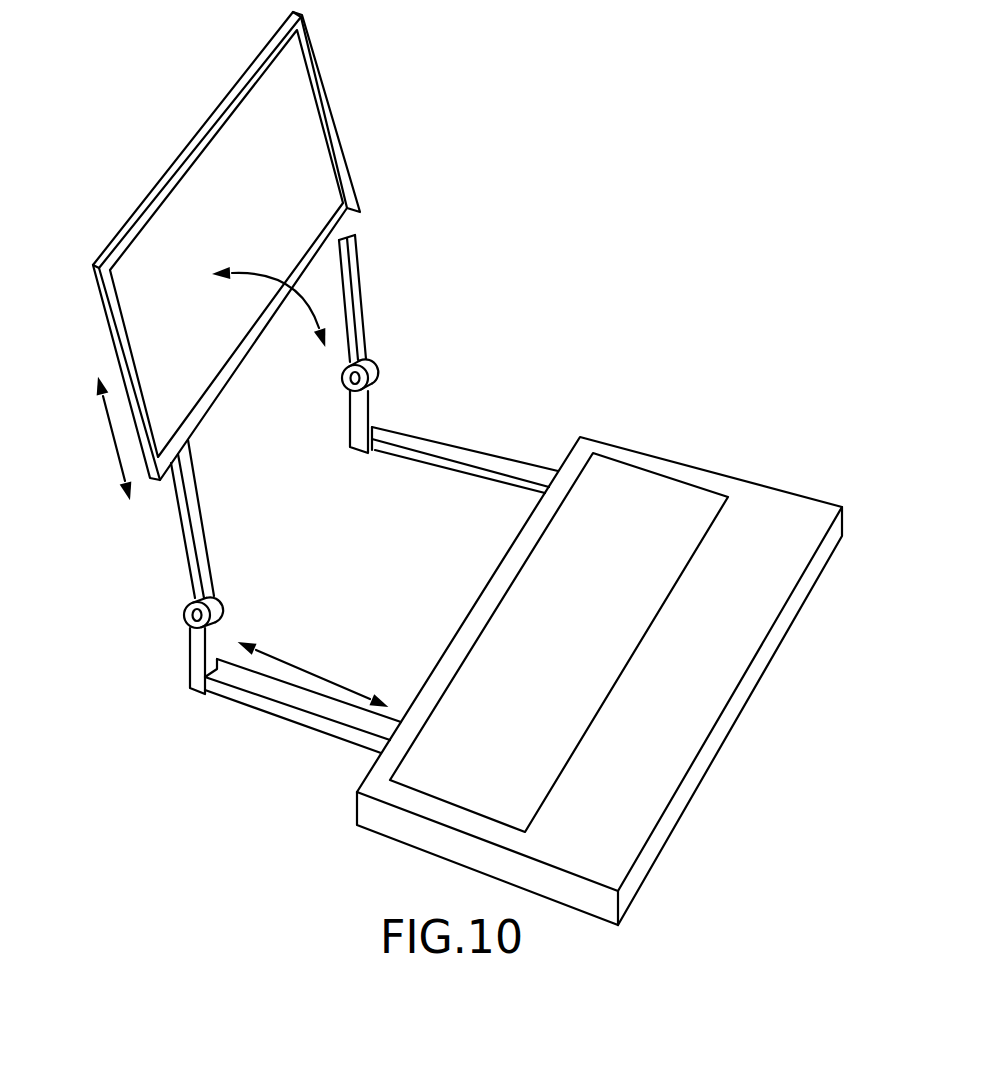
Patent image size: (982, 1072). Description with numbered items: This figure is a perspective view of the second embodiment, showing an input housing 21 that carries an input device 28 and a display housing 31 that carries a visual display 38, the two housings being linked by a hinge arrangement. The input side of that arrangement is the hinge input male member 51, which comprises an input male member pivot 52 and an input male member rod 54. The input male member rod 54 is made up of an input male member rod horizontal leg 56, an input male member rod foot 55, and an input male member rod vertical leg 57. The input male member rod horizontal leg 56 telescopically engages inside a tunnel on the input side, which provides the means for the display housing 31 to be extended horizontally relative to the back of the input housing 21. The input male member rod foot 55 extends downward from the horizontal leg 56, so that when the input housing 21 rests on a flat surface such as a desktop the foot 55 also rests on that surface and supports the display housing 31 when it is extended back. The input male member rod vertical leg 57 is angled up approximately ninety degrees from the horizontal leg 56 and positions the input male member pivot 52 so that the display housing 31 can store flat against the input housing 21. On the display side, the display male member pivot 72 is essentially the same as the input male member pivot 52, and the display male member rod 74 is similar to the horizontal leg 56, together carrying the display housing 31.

The input housing 21 is at (748, 468).
The input device 28 is at (632, 503).
The display housing 31 is at (338, 60).
The visual display 38 is at (167, 280).
The hinge input male member 51 is at (180, 645).
The input male member pivot 52 is at (343, 388).
The input male member rod 54 is at (403, 465).
The input male member rod foot 55 is at (352, 445).
The input male member rod horizontal leg 56 is at (490, 455).
The input male member rod vertical leg 57 is at (377, 413).
The display male member pivot 72 is at (383, 365).
The display male member rod 74 is at (359, 288).